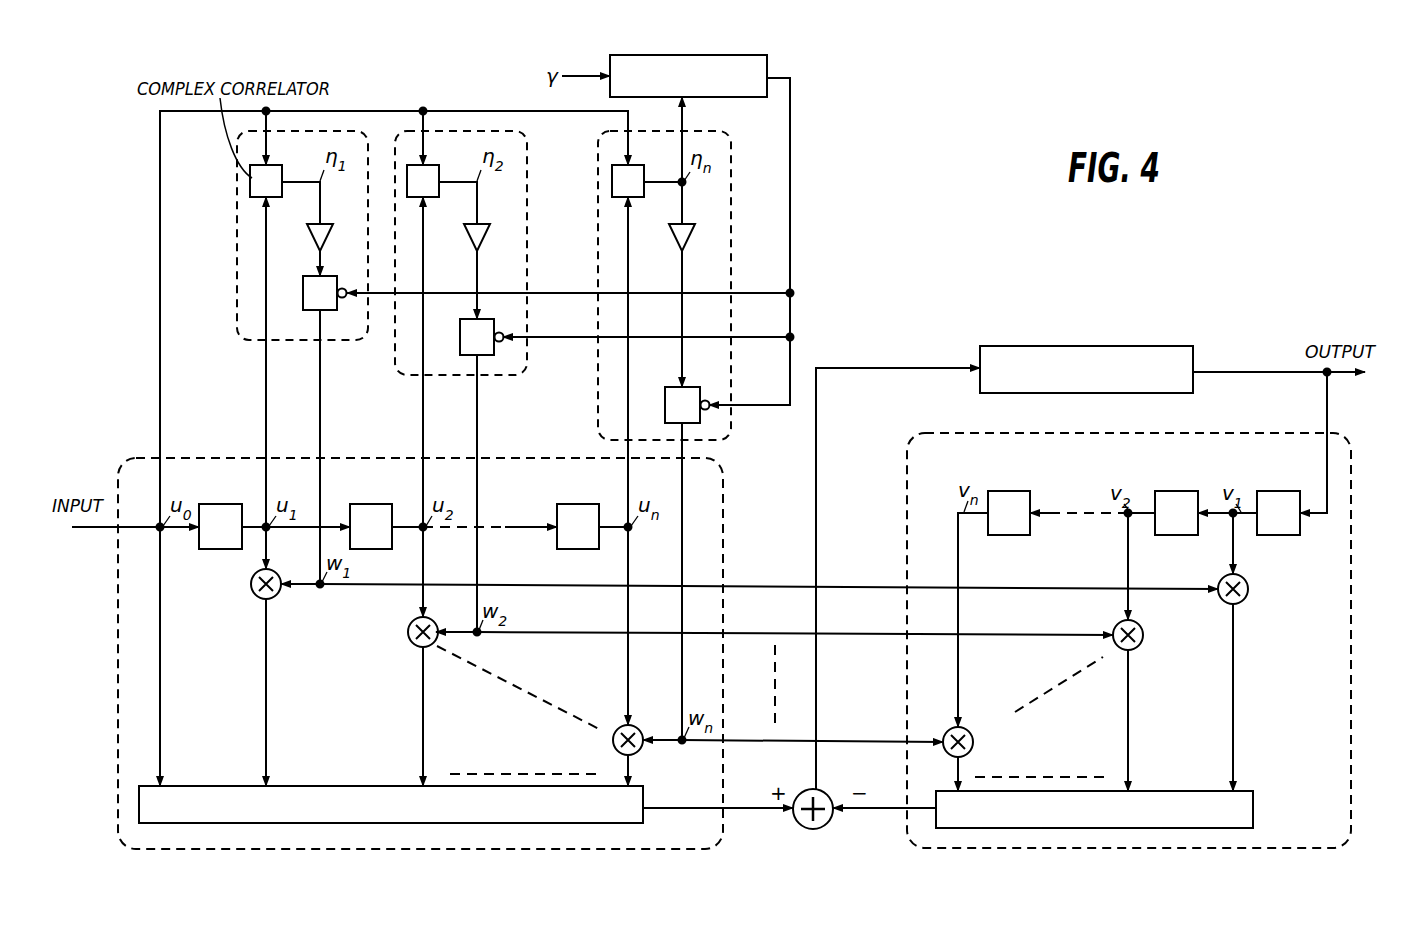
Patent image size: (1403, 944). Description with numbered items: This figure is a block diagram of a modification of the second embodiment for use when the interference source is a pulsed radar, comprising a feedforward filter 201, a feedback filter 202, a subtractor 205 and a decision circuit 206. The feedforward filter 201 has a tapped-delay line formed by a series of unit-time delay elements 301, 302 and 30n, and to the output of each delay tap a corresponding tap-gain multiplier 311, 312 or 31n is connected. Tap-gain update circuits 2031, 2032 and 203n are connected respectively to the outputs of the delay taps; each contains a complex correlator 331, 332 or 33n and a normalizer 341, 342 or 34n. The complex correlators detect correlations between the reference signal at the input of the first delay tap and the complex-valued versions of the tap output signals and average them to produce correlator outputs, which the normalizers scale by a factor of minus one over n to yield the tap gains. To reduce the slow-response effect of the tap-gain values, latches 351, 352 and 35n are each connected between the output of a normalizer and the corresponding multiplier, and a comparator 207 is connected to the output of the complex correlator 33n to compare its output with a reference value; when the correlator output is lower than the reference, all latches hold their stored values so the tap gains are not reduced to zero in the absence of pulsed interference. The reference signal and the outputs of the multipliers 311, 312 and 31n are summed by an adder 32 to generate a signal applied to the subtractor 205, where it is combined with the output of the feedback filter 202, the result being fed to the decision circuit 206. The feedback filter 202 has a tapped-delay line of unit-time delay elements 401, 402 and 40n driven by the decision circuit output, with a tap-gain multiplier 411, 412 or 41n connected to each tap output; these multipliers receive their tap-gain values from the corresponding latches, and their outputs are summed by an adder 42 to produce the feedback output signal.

The feedforward filter 201 is at (395, 850).
The feedback filter 202 is at (1126, 850).
The subtractor 205 is at (818, 790).
The decision circuit 206 is at (1087, 345).
The comparator 207 is at (768, 73).
The tap-gain update circuit 2031 is at (242, 342).
The tap-gain update circuit 2032 is at (398, 375).
The tap-gain update circuit 203n is at (598, 411).
The unit-time delay element 301 is at (222, 503).
The unit-time delay element 302 is at (365, 503).
The unit-time delay element 30n is at (574, 503).
The tap-gain multiplier 311 is at (255, 595).
The tap-gain multiplier 312 is at (410, 643).
The tap-gain multiplier 31n is at (636, 728).
The adder 32 is at (644, 791).
The complex correlator 331 is at (278, 174).
The complex correlator 332 is at (435, 174).
The complex correlator 33n is at (640, 174).
The normalizer 341 is at (326, 232).
The normalizer 342 is at (483, 232).
The normalizer 34n is at (688, 232).
The latch 351 is at (305, 284).
The latch 352 is at (461, 326).
The latch 35n is at (700, 392).
The unit-time delay element 401 is at (1276, 490).
The unit-time delay element 402 is at (1174, 490).
The unit-time delay element 40n is at (1010, 490).
The tap-gain multiplier 411 is at (1247, 586).
The tap-gain multiplier 412 is at (1142, 632).
The tap-gain multiplier 41n is at (968, 732).
The adder 42 is at (1254, 800).